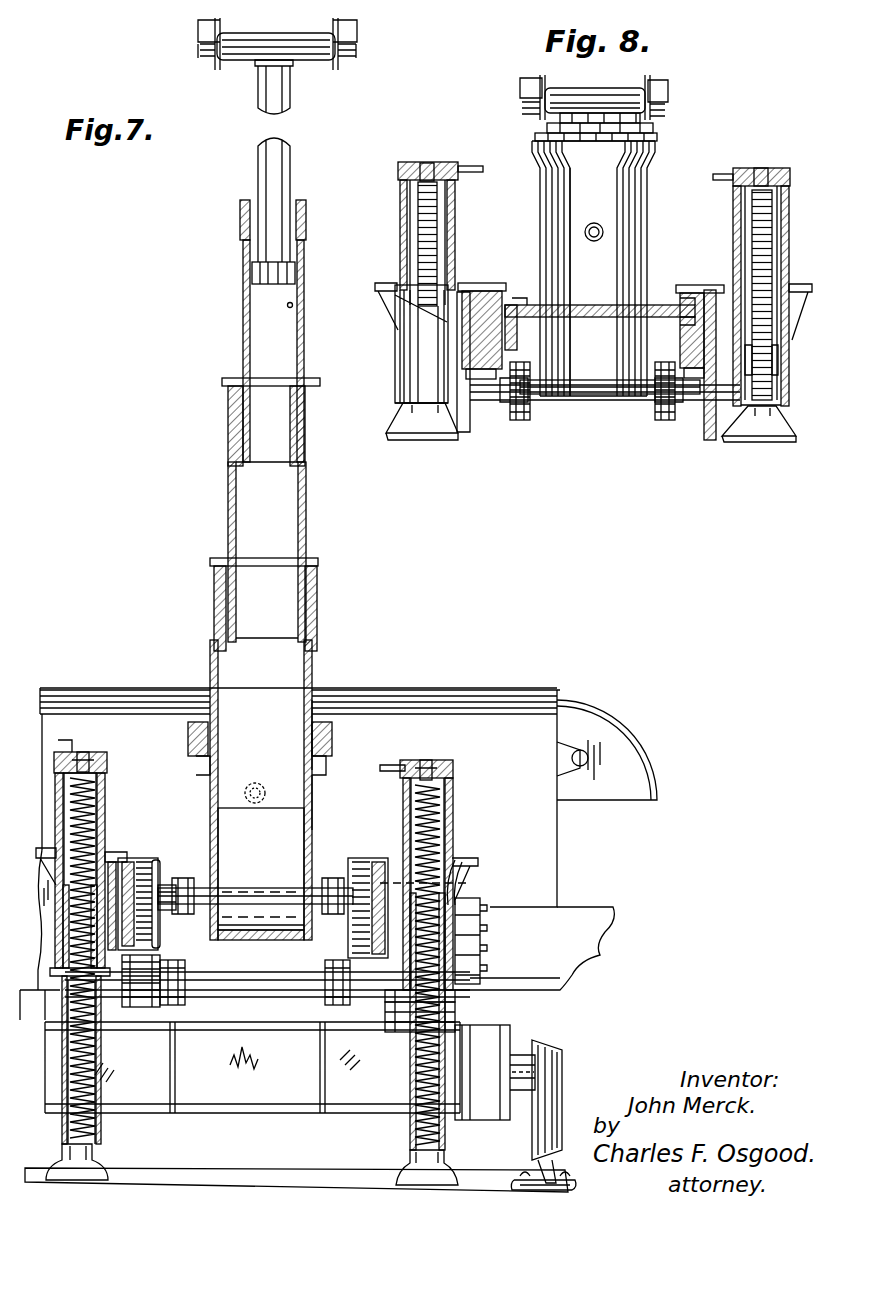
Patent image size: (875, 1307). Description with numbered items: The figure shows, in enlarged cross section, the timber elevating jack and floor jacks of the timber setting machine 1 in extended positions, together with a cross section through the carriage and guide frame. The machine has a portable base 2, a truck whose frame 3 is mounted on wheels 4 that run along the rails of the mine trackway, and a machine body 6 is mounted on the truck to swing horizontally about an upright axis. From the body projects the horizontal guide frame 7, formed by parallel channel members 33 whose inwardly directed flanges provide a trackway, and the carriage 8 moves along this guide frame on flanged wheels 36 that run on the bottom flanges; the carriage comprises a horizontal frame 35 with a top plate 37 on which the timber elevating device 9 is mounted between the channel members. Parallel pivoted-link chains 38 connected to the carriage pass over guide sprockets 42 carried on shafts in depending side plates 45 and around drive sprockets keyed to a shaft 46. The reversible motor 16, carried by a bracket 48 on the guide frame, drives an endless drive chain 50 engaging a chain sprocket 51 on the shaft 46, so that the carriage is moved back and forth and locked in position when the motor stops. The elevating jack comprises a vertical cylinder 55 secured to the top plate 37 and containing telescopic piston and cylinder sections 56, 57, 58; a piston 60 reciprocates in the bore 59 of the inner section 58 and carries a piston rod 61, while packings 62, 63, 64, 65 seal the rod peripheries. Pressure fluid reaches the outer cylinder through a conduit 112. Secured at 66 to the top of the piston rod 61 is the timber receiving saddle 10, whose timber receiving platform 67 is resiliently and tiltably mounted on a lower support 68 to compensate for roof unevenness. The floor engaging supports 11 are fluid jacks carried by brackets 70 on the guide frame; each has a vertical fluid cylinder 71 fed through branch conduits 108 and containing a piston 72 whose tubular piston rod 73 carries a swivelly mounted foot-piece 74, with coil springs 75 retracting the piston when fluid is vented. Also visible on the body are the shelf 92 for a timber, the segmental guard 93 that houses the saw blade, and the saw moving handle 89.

In FIG. 7, the timber setting machine 1 is at (519, 692).
In FIG. 7, the portable base 2 is at (468, 1068).
In FIG. 7, the frame 3 is at (318, 1120).
In FIG. 7, the wheels 4 is at (540, 1082).
In FIG. 7, the machine body 6 is at (545, 708).
In FIG. 7, the horizontal guide frame 7 is at (156, 885).
In FIG. 8, the horizontal guide frame 7 is at (716, 352).
In FIG. 7, the carriage 8 is at (322, 880).
In FIG. 8, the carriage 8 is at (622, 366).
In FIG. 7, the timber elevating device 9 is at (314, 763).
In FIG. 8, the timber elevating device 9 is at (532, 215).
In FIG. 7, the timber receiving saddle 10 is at (212, 32).
In FIG. 8, the timber receiving saddle 10 is at (665, 88).
In FIG. 7, the floor engaging supports 11 is at (105, 807).
In FIG. 8, the floor engaging supports 11 is at (455, 216).
In FIG. 7, the reversible motor 16 is at (470, 938).
In FIG. 7, the channel members 33 is at (145, 860).
In FIG. 8, the channel members 33 is at (490, 283).
In FIG. 7, the horizontal frame 35 is at (300, 934).
In FIG. 8, the horizontal frame 35 is at (640, 372).
In FIG. 7, the flanged wheels 36 is at (130, 862).
In FIG. 8, the flanged wheels 36 is at (480, 290).
In FIG. 7, the top plate 37 is at (200, 872).
In FIG. 8, the top plate 37 is at (600, 318).
In FIG. 7, the pivoted-link chains 38 is at (320, 1002).
In FIG. 8, the pivoted-link chains 38 is at (515, 420).
In FIG. 7, the guide sprocket 42 is at (168, 1006).
In FIG. 8, the guide sprocket 42 is at (526, 412).
In FIG. 7, the side plates 45 is at (252, 1067).
In FIG. 7, the shaft 46 is at (208, 988).
In FIG. 7, the bracket 48 is at (460, 886).
In FIG. 7, the endless drive chain 50 is at (455, 1008).
In FIG. 7, the chain sprocket 51 is at (456, 1030).
In FIG. 7, the vertical cylinder 55 is at (313, 802).
In FIG. 8, the vertical cylinder 55 is at (656, 212).
In FIG. 7, the piston and cylinder section 56 is at (312, 676).
In FIG. 7, the piston and cylinder section 57 is at (228, 492).
In FIG. 7, the inner section 58 is at (243, 318).
In FIG. 7, the bore 59 is at (292, 305).
In FIG. 7, the piston 60 is at (250, 270).
In FIG. 7, the piston rod 61 is at (290, 178).
In FIG. 7, the packing 62 is at (200, 760).
In FIG. 7, the packing 63 is at (215, 592).
In FIG. 7, the packing 64 is at (232, 413).
In FIG. 7, the packing 65 is at (246, 233).
In FIG. 7, the securing point 66 is at (262, 80).
In FIG. 8, the securing point 66 is at (604, 135).
In FIG. 7, the timber receiving platform 67 is at (272, 36).
In FIG. 8, the timber receiving platform 67 is at (580, 98).
In FIG. 7, the lower support 68 is at (350, 58).
In FIG. 8, the lower support 68 is at (670, 116).
In FIG. 7, the brackets 70 is at (108, 852).
In FIG. 8, the brackets 70 is at (395, 320).
In FIG. 7, the vertical fluid cylinder 71 is at (102, 781).
In FIG. 8, the vertical fluid cylinder 71 is at (400, 213).
In FIG. 7, the piston 72 is at (88, 884).
In FIG. 8, the piston 72 is at (446, 189).
In FIG. 7, the tubular piston rod 73 is at (98, 1131).
In FIG. 8, the tubular piston rod 73 is at (405, 404).
In FIG. 7, the foot-piece 74 is at (96, 1162).
In FIG. 8, the foot-piece 74 is at (425, 436).
In FIG. 7, the coil springs 75 is at (92, 800).
In FIG. 8, the coil springs 75 is at (436, 252).
In FIG. 7, the saw moving handle 89 is at (590, 757).
In FIG. 7, the shelf 92 is at (580, 907).
In FIG. 7, the segmental guard 93 is at (620, 714).
In FIG. 7, the branch conduits 108 is at (114, 752).
In FIG. 8, the conduit 112 is at (596, 225).